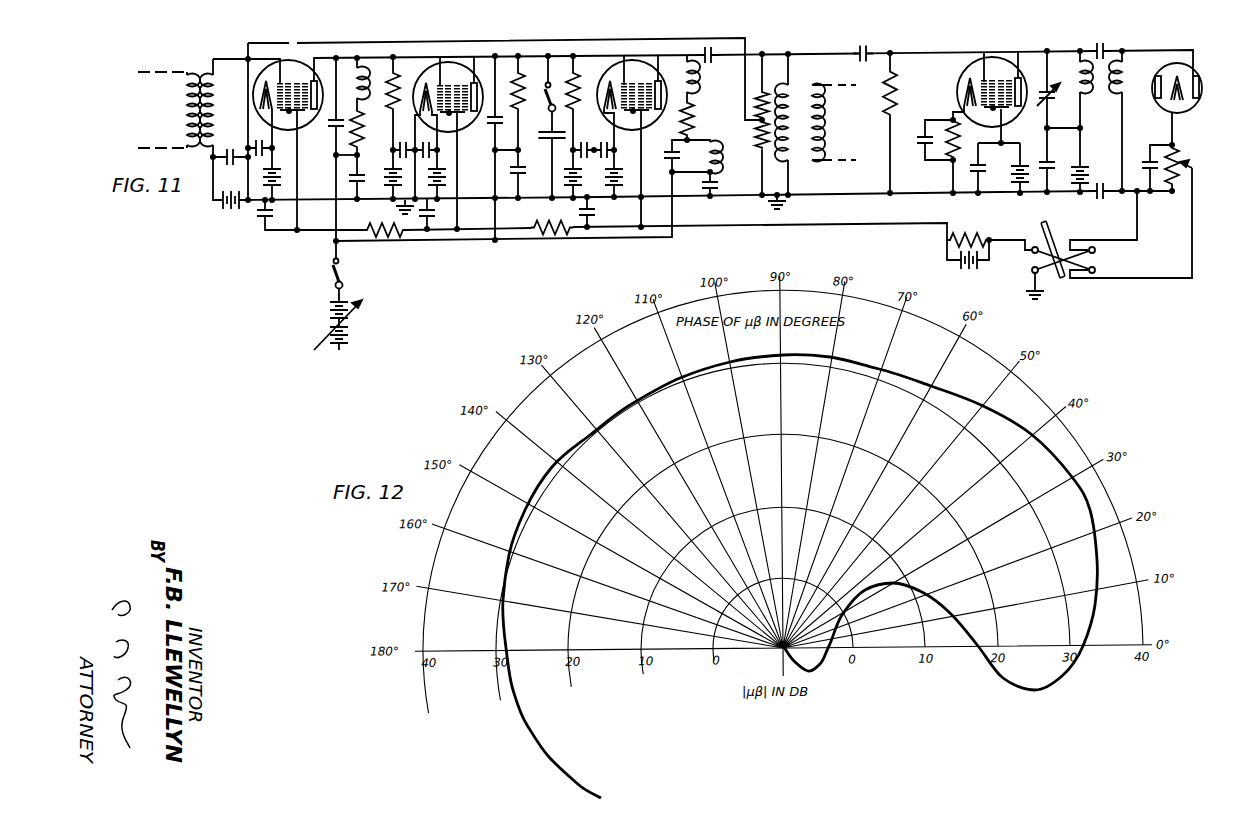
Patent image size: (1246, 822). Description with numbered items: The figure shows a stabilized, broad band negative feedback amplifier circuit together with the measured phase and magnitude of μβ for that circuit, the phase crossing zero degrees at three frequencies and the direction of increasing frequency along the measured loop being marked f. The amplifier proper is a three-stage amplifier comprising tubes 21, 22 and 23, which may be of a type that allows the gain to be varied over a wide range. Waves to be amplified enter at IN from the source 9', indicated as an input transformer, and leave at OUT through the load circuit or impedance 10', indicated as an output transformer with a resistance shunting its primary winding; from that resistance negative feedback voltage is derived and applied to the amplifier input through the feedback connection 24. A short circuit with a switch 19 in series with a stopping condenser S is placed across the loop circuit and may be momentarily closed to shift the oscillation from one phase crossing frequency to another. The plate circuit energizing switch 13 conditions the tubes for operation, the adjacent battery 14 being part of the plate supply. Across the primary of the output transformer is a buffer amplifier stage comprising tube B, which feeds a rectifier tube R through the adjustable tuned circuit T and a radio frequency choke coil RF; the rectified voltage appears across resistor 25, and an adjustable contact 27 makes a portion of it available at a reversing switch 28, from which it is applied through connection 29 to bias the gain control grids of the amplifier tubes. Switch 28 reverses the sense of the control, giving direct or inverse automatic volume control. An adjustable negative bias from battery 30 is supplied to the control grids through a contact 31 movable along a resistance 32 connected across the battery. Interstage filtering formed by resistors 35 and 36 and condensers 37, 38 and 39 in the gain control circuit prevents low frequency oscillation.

In FIG. 11, the source of waves to be amplified 9' is at (198, 100).
In FIG. 11, the amplifier tube 21 is at (266, 80).
In FIG. 11, the amplifier tube 22 is at (470, 64).
In FIG. 11, the amplifier tube 23 is at (655, 62).
In FIG. 11, the feedback connection 24 is at (749, 46).
In FIG. 11, the load circuit or impedance 10' is at (815, 110).
In FIG. 11, the switch 19 is at (540, 93).
In FIG. 11, the stopping condenser S is at (541, 135).
In FIG. 11, the buffer amplifier tube B is at (1005, 58).
In FIG. 11, the tuned circuit T is at (1060, 58).
In FIG. 11, the radio frequency choke coil RF is at (1119, 92).
In FIG. 11, the rectifier tube R is at (1202, 88).
In FIG. 11, the resistor 25 is at (1182, 147).
In FIG. 11, the adjustable contact 27 is at (1192, 168).
In FIG. 11, the reversing switch 28 is at (1050, 234).
In FIG. 11, the connection 29 is at (1026, 243).
In FIG. 11, the battery 30 is at (945, 258).
In FIG. 11, the contact 31 is at (967, 239).
In FIG. 11, the resistance 32 is at (990, 238).
In FIG. 11, the plate circuit energizing switch 13 is at (341, 263).
In FIG. 11, the adjustable battery 14 is at (346, 320).
In FIG. 11, the resistor 35 is at (552, 230).
In FIG. 11, the resistor 36 is at (383, 232).
In FIG. 11, the condenser 37 is at (596, 213).
In FIG. 11, the condenser 38 is at (438, 214).
In FIG. 11, the condenser 39 is at (258, 214).
In FIG. 11, the input IN is at (174, 112).
In FIG. 11, the output OUT is at (852, 124).
In FIG. 12, the frequency direction along loop characteristic f is at (506, 623).